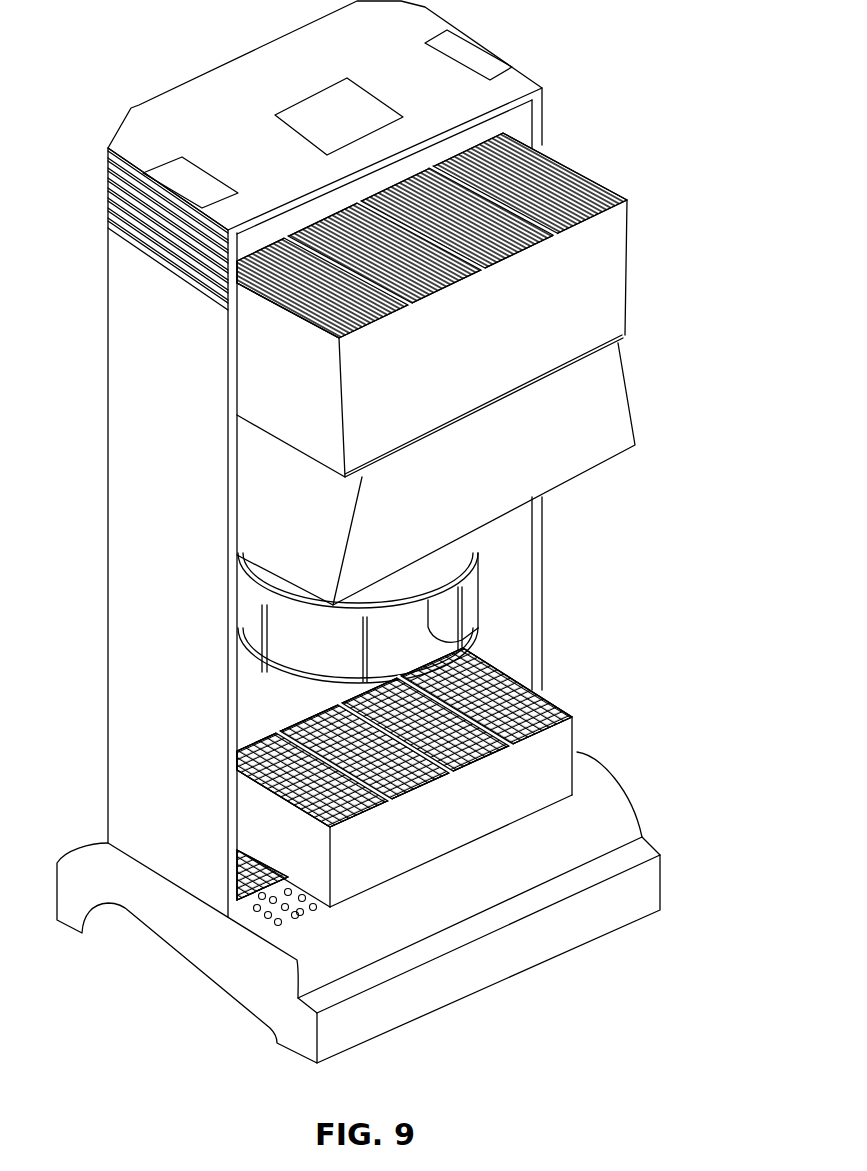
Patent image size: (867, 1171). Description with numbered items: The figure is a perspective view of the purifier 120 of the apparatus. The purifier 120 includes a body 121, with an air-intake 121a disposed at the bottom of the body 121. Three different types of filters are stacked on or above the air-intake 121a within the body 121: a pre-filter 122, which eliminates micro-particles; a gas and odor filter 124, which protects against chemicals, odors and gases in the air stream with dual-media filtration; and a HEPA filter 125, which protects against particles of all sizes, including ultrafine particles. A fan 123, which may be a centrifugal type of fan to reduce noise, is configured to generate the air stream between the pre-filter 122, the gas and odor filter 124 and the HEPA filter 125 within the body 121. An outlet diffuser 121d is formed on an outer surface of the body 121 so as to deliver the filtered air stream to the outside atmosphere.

The purifier 120 is at (634, 32).
The body 121 is at (118, 742).
The air-intake 121a is at (177, 938).
The outlet diffuser 121d is at (108, 197).
The pre-filter 122 is at (568, 745).
The fan 123 is at (478, 550).
The gas and odor filter 124 is at (620, 405).
The HEPA filter 125 is at (625, 288).